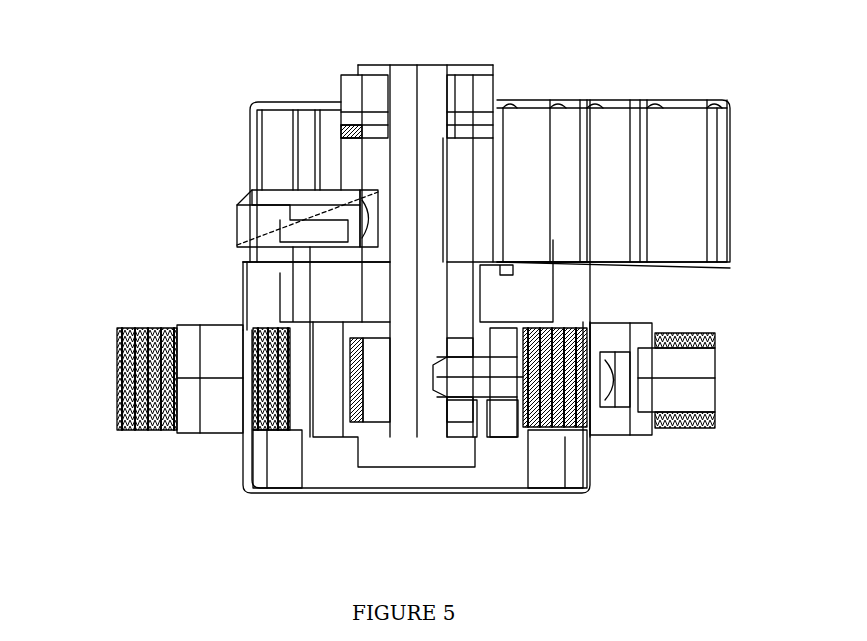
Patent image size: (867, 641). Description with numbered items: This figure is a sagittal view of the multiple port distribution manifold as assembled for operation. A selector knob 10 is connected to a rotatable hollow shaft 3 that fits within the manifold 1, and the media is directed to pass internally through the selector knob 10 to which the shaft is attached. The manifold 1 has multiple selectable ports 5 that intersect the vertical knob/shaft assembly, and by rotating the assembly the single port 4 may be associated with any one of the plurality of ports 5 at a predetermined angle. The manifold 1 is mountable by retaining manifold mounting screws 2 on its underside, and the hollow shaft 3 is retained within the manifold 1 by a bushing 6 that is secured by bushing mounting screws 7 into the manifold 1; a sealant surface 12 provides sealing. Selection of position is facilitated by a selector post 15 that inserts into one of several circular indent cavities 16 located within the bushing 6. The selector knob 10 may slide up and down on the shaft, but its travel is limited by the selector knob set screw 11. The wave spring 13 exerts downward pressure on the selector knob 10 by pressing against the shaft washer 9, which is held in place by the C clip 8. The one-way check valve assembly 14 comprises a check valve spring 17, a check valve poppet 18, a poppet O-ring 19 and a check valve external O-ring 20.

The manifold 1 is at (508, 482).
The manifold mounting screws 2 is at (281, 497).
The hollow shaft 3 is at (413, 440).
The port 1 (in/out) 4 is at (425, 55).
The port 2-4 (in/out) 5 is at (243, 330).
The bushing 6 is at (532, 292).
The bushing mounting screws 7 is at (305, 291).
The C clip 8 is at (474, 70).
The shaft washer 9 is at (330, 80).
The selector knob 10 is at (666, 88).
The selector knob set screw 11 is at (250, 207).
The sealant surface 12 is at (353, 440).
The wave spring 13 is at (344, 128).
The one-way check valve assembly 14 is at (626, 333).
The selector post 15 is at (514, 267).
The circular indent cavity 16 is at (340, 273).
The check valve spring 17 is at (572, 373).
The check valve poppet 18 is at (622, 410).
The poppet O-ring 19 is at (640, 382).
The check valve external O-ring 20 is at (177, 437).